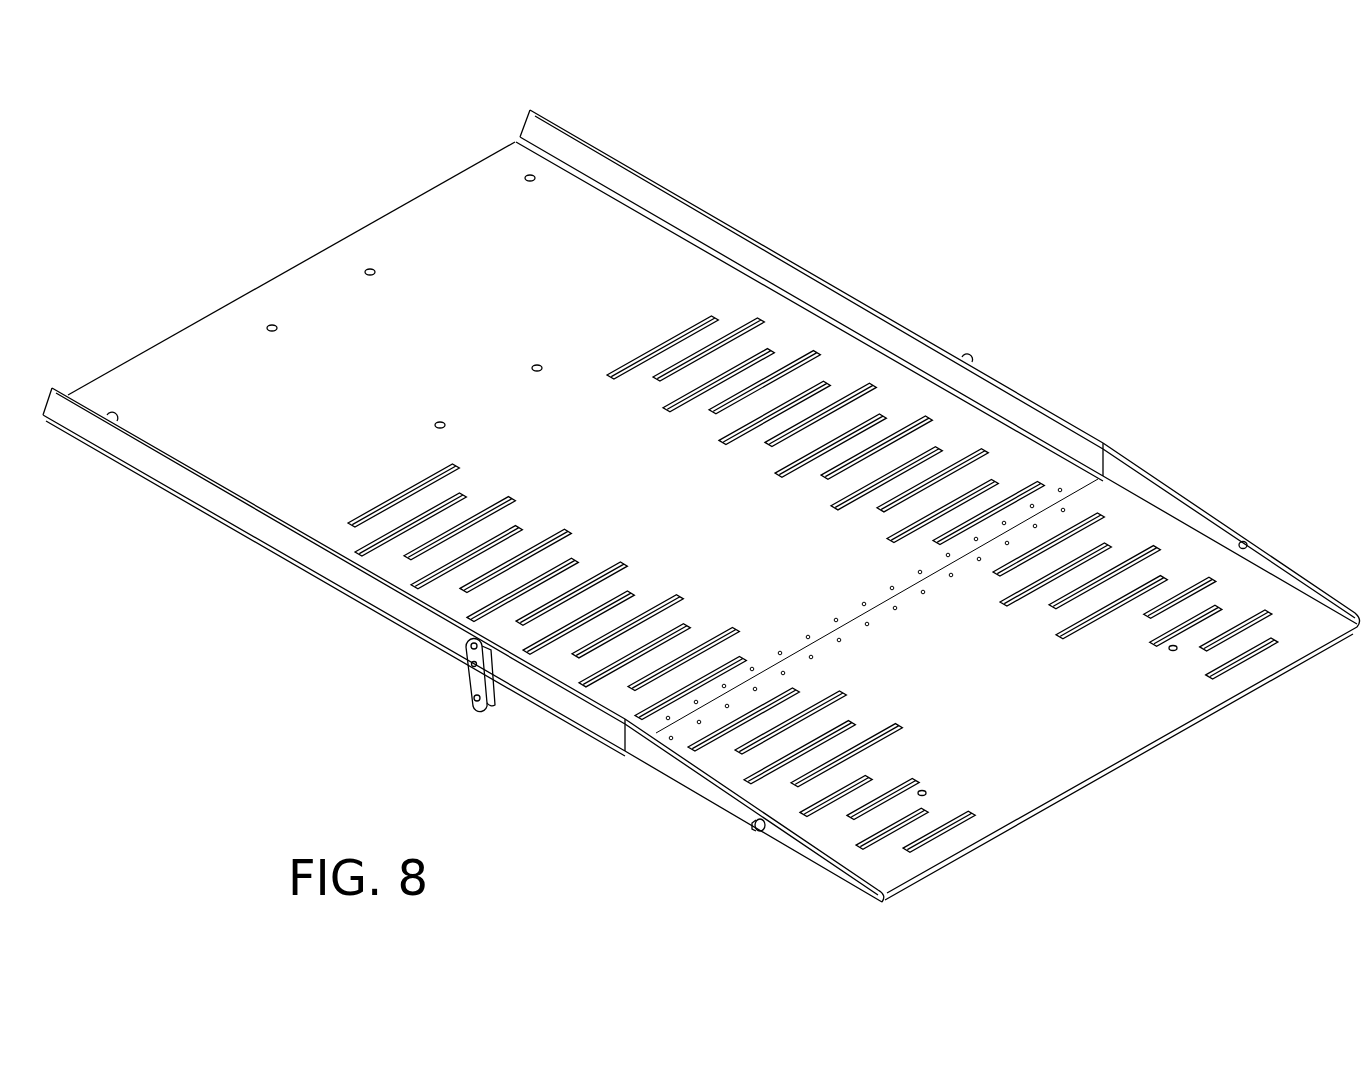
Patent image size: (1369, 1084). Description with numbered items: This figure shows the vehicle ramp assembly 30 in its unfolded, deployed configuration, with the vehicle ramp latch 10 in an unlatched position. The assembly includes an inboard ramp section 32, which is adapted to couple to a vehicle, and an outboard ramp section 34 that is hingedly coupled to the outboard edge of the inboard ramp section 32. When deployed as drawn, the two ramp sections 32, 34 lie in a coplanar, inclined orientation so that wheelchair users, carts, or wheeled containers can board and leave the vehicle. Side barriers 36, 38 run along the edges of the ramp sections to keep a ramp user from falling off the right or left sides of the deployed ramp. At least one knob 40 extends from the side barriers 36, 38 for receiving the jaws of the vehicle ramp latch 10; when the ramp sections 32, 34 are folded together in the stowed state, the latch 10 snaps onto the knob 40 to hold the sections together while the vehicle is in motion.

The vehicle ramp assembly 30 is at (777, 191).
The inboard ramp section 32 is at (425, 333).
The outboard ramp section 34 is at (976, 707).
The side barrier 36 is at (1143, 477).
The side barrier 38 is at (865, 317).
The knob 40 is at (1252, 535).
The vehicle ramp latch 10 is at (475, 680).